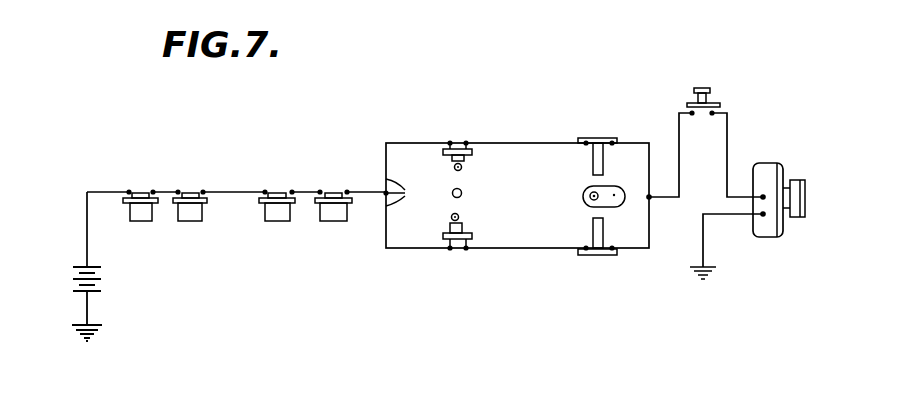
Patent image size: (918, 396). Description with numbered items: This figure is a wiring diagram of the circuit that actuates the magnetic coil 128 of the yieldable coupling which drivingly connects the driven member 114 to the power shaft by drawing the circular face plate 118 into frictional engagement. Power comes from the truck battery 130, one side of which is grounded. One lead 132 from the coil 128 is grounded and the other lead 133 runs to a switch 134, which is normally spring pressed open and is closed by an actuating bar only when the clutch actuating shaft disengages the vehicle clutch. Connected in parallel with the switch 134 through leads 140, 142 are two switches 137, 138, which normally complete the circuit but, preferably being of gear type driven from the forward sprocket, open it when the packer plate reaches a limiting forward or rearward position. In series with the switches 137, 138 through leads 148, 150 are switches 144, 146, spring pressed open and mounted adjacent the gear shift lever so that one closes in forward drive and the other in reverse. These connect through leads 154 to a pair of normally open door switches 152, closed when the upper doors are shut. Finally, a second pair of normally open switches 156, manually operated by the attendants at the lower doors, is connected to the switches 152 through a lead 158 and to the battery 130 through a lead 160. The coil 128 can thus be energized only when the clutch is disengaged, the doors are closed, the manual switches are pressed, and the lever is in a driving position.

The driven member 114 is at (803, 192).
The circular face plate 118 is at (784, 232).
The magnetic coil 128 is at (765, 167).
The battery 130 is at (103, 280).
The lead 132 is at (703, 243).
The lead 133 is at (727, 134).
The switch 134 is at (704, 88).
The switch 137 is at (599, 256).
The switch 138 is at (600, 138).
The lead 140 is at (650, 232).
The lead 142 is at (650, 153).
The switch 144 is at (463, 228).
The switch 146 is at (463, 159).
The lead 148 is at (543, 250).
The lead 150 is at (535, 132).
The switches 152 is at (333, 214).
The leads 154 is at (412, 192).
The switches 156 is at (190, 214).
The lead 158 is at (233, 192).
The lead 160 is at (87, 219).